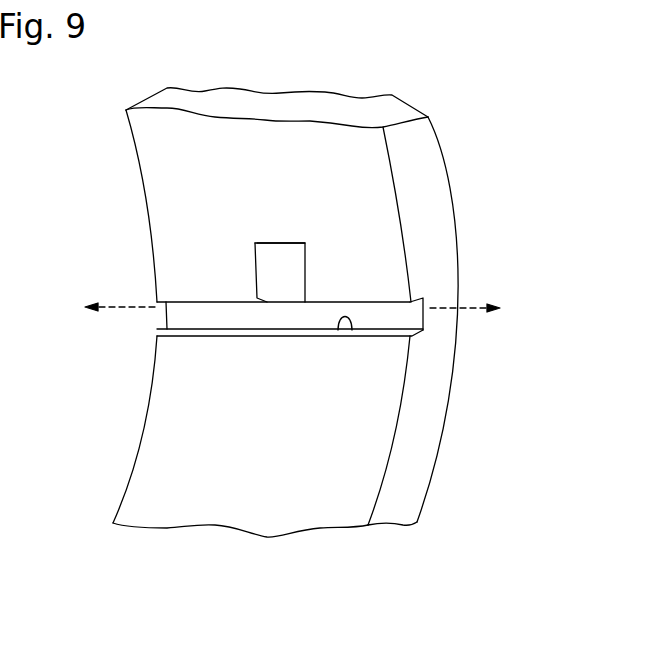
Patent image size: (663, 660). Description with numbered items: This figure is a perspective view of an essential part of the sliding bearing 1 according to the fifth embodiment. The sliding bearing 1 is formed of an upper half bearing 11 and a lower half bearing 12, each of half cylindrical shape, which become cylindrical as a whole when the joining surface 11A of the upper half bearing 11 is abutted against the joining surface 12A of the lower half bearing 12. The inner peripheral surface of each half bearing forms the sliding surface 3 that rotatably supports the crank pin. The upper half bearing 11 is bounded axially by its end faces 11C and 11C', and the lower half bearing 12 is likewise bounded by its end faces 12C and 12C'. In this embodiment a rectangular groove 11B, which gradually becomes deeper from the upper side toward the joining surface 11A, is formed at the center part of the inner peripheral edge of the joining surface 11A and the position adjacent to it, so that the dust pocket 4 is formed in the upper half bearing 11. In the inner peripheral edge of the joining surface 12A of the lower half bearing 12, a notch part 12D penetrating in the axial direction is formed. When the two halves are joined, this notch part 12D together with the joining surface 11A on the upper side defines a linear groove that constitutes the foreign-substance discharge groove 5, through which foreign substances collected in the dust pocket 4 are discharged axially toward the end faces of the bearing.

The sliding bearing 1 is at (485, 217).
The sliding surface 3 is at (293, 495).
The dust pocket 4 is at (288, 278).
The foreign-substance discharge groove 5 is at (275, 313).
The upper half bearing 11 is at (425, 148).
The joining surface 11A is at (410, 302).
The rectangular groove 11B is at (261, 294).
The axial end face 11C is at (470, 319).
The axial end face 11C' is at (109, 206).
The lower half bearing 12 is at (422, 458).
The joining surface 12A is at (460, 297).
The end face 12C is at (472, 430).
The end face 12C' is at (93, 429).
The notch part 12D is at (352, 330).